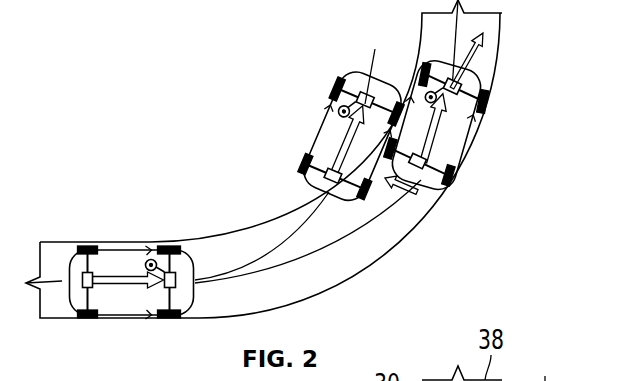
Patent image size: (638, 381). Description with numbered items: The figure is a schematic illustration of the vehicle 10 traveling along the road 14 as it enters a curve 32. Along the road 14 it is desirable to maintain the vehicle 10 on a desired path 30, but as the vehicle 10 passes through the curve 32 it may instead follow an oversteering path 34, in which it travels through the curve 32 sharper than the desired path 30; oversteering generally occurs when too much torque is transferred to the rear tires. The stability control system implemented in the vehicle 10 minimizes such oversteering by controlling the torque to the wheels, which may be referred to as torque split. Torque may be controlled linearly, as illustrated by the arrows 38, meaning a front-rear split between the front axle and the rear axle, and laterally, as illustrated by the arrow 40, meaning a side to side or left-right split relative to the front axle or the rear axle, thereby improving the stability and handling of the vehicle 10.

The vehicle 10 is at (323, 128).
The road 14 is at (113, 242).
The desired path 30 is at (454, 48).
The curve 32 is at (428, 212).
The oversteering path 34 is at (372, 66).
The arrows 38 is at (478, 58).
The arrow 40 is at (410, 196).